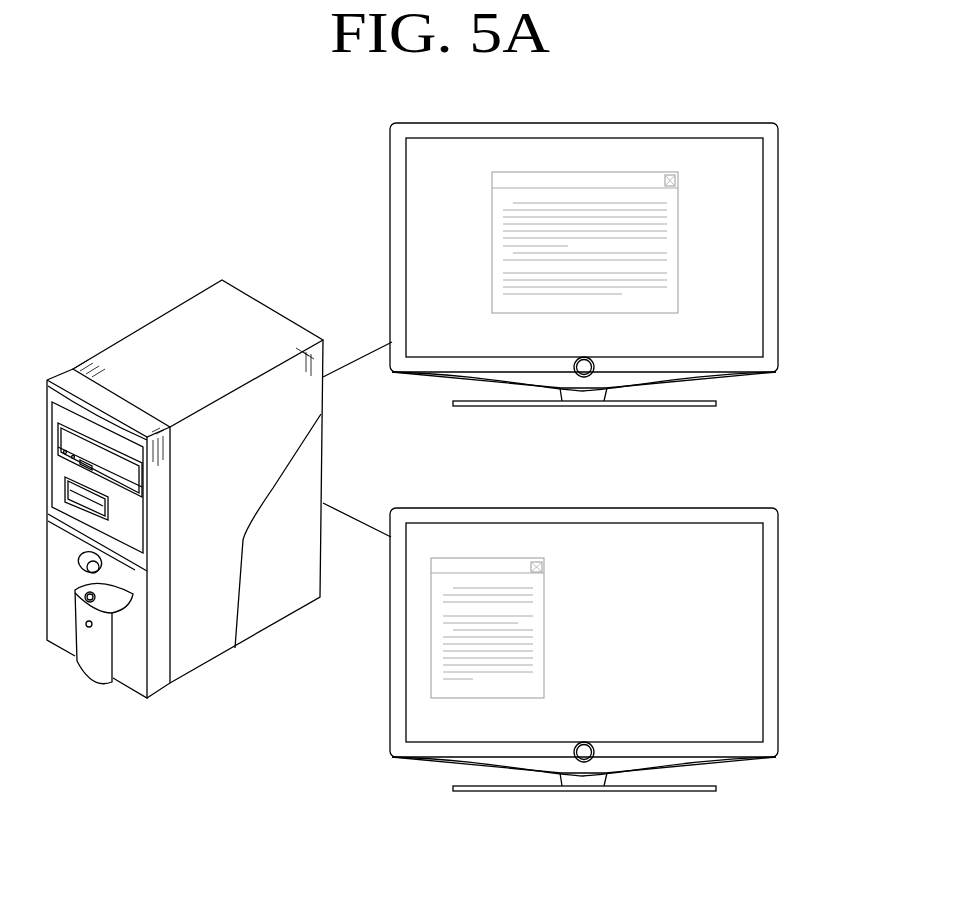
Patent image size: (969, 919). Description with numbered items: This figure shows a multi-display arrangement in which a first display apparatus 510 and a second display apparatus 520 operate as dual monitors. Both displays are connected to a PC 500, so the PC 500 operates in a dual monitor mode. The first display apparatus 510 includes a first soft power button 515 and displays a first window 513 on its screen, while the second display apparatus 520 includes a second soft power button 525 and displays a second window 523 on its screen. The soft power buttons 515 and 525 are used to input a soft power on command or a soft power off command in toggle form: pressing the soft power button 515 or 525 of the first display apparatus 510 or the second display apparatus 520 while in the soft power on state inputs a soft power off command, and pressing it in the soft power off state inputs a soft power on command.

The PC 500 is at (137, 330).
The first display apparatus 510 is at (777, 124).
The first window 513 is at (583, 171).
The first soft power button 515 is at (586, 377).
The second display apparatus 520 is at (777, 509).
The second window 523 is at (488, 557).
The second soft power button 525 is at (586, 762).